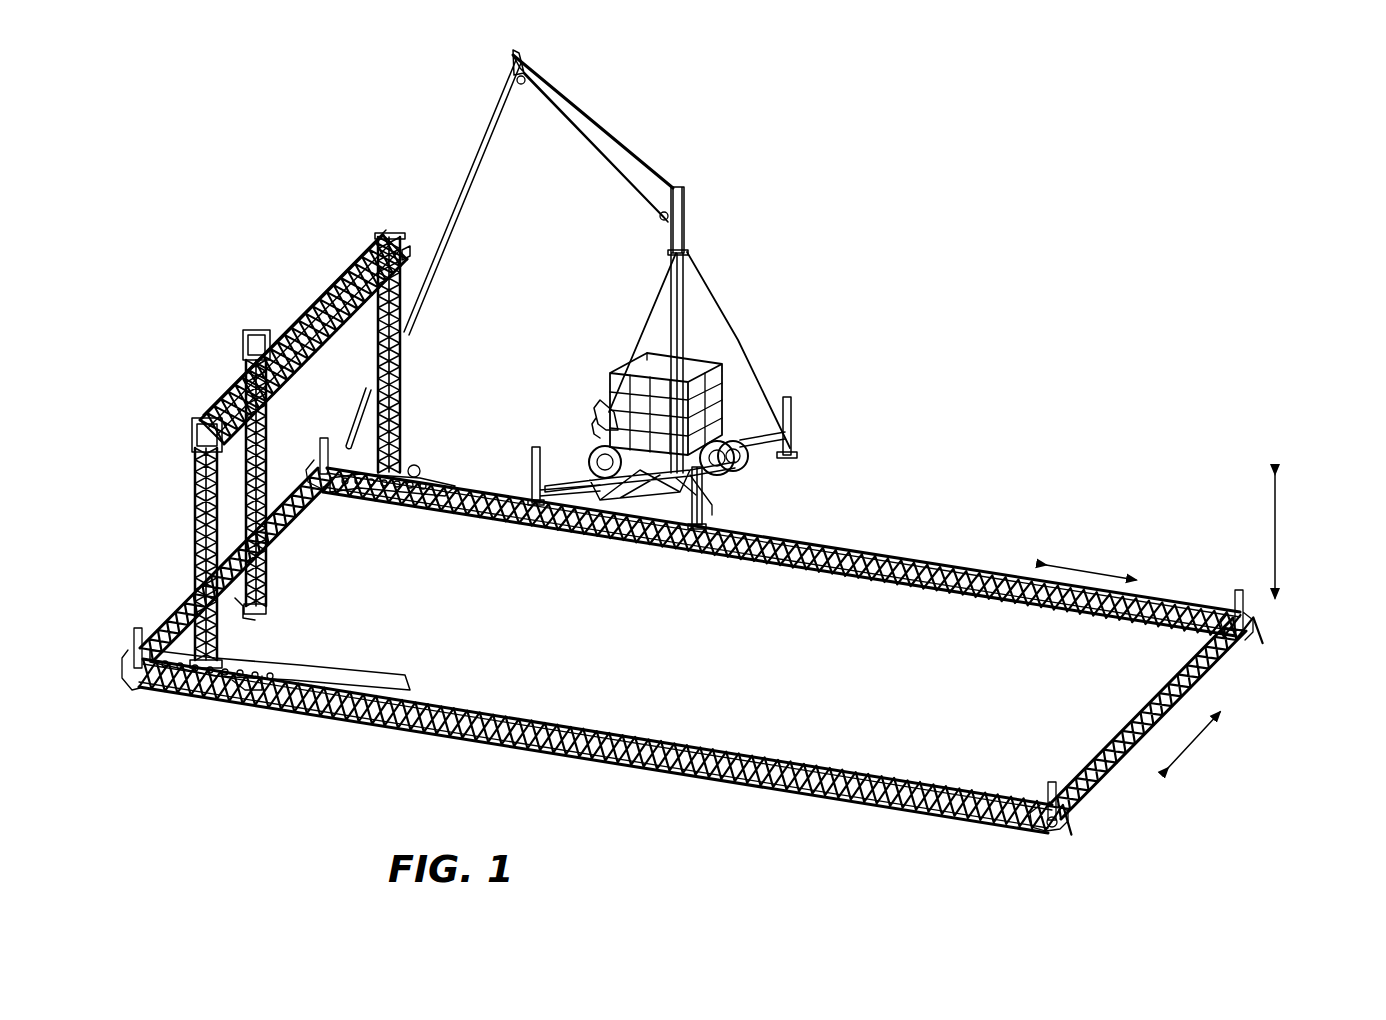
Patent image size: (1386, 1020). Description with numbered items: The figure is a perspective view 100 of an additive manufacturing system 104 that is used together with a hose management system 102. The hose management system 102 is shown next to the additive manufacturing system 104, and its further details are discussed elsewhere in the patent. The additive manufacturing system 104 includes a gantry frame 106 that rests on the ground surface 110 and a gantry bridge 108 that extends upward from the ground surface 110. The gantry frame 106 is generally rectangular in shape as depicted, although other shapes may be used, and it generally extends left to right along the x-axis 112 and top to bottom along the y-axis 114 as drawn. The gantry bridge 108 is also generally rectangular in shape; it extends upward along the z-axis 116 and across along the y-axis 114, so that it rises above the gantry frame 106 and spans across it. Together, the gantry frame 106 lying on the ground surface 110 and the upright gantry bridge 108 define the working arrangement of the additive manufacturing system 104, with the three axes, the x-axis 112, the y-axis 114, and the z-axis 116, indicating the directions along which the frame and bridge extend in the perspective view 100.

The perspective view 100 is at (358, 96).
The hose management system 102 is at (742, 176).
The additive manufacturing system 104 is at (1018, 850).
The gantry frame 106 is at (418, 732).
The gantry bridge 108 is at (350, 292).
The ground surface 110 is at (967, 696).
The x-axis 112 is at (1092, 572).
The y-axis 114 is at (1196, 748).
The z-axis 116 is at (1277, 538).